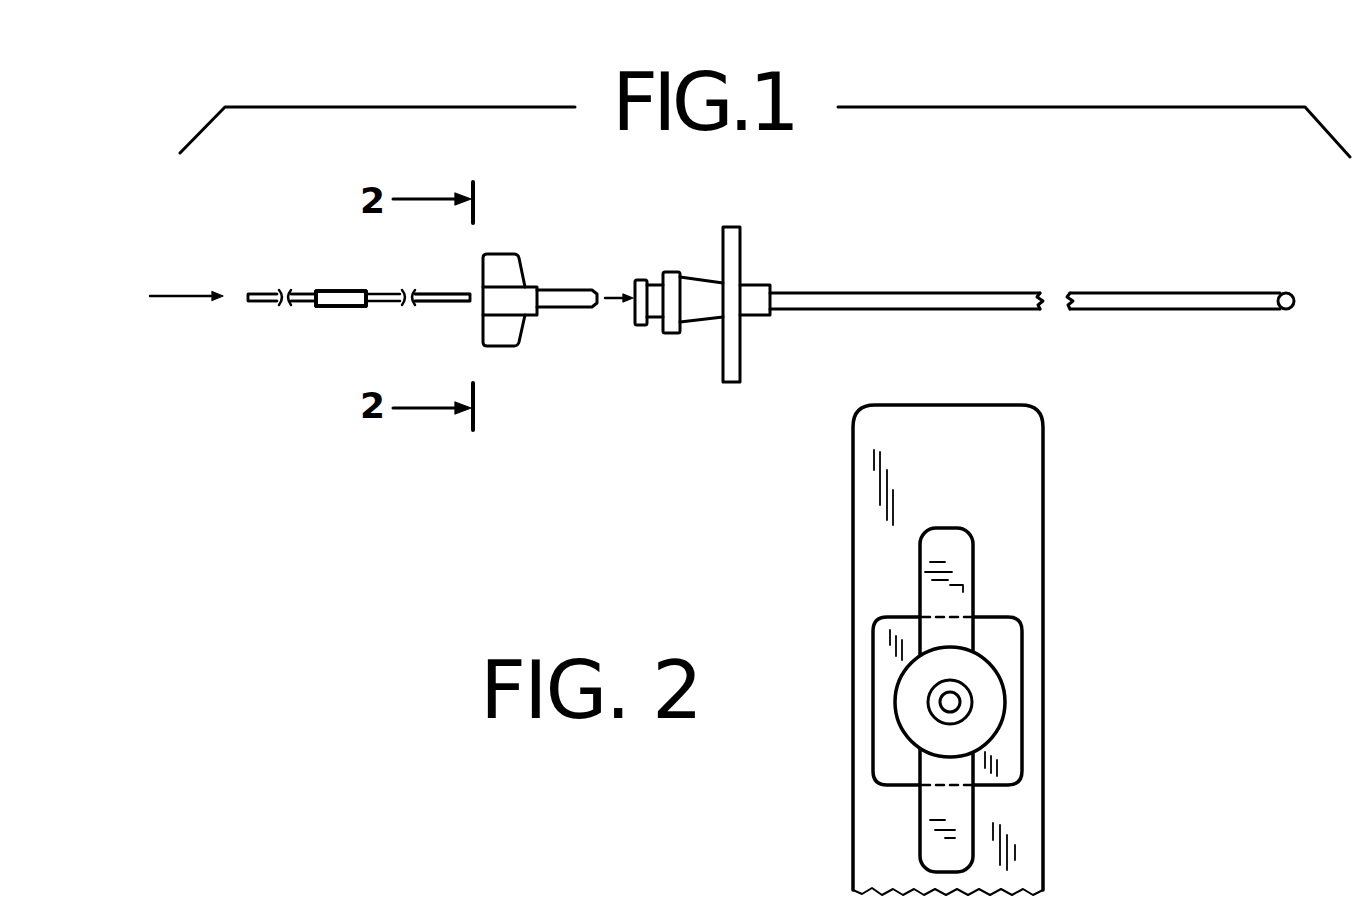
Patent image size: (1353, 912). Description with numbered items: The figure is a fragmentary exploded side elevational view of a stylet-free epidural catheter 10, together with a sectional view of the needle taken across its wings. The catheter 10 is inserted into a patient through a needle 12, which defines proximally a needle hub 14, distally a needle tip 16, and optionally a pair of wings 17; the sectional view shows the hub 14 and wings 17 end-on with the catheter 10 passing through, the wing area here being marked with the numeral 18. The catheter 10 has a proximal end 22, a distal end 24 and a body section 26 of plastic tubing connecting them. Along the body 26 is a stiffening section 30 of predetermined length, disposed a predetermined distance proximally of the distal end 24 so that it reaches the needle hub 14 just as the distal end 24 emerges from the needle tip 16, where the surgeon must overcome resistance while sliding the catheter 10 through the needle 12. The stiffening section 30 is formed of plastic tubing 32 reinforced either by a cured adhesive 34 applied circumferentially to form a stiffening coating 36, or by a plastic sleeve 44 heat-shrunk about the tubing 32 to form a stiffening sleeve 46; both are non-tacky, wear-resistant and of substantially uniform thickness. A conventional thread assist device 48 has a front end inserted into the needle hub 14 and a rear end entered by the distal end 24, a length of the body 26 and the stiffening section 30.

In FIG. 1, the stylet-free epidural catheter 10 is at (264, 290).
In FIG. 2, the stylet-free epidural catheter 10 is at (988, 702).
In FIG. 1, the needle 12 is at (997, 292).
In FIG. 1, the needle hub 14 is at (655, 310).
In FIG. 2, the needle hub 14 is at (1022, 827).
In FIG. 1, the needle tip 16 is at (1288, 296).
In FIG. 1, the wings 17 is at (731, 252).
In FIG. 2, the wings 17 is at (1022, 436).
In FIG. 2, the wing 18 is at (952, 570).
In FIG. 1, the proximal end 22 is at (248, 300).
In FIG. 1, the distal end 24 is at (470, 293).
In FIG. 1, the body section 26 is at (300, 291).
In FIG. 1, the stiffening section 30 is at (359, 314).
In FIG. 1, the plastic tubing 32 is at (437, 302).
In FIG. 1, the cured adhesive 34 is at (327, 307).
In FIG. 1, the stiffening coating 36 is at (324, 389).
In FIG. 1, the plastic sleeve 44 is at (292, 410).
In FIG. 1, the stiffening sleeve 46 is at (324, 410).
In FIG. 1, the thread assist device 48 is at (538, 288).